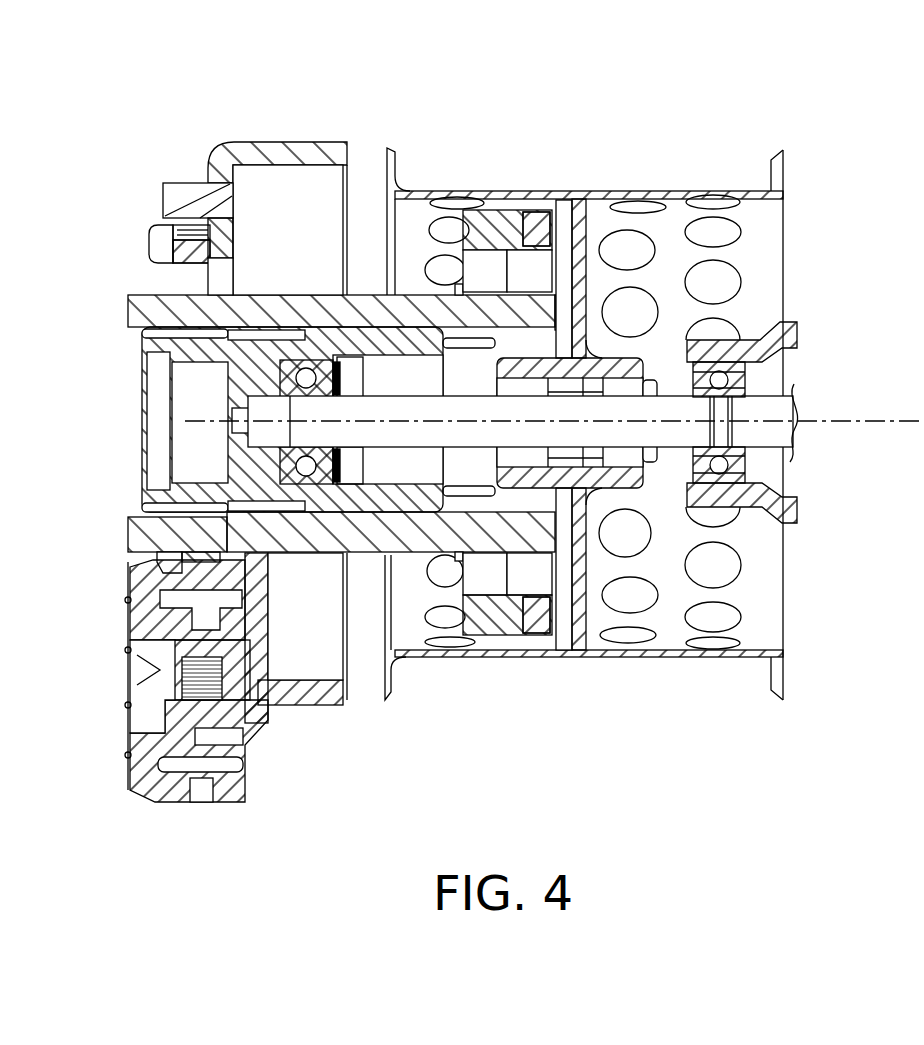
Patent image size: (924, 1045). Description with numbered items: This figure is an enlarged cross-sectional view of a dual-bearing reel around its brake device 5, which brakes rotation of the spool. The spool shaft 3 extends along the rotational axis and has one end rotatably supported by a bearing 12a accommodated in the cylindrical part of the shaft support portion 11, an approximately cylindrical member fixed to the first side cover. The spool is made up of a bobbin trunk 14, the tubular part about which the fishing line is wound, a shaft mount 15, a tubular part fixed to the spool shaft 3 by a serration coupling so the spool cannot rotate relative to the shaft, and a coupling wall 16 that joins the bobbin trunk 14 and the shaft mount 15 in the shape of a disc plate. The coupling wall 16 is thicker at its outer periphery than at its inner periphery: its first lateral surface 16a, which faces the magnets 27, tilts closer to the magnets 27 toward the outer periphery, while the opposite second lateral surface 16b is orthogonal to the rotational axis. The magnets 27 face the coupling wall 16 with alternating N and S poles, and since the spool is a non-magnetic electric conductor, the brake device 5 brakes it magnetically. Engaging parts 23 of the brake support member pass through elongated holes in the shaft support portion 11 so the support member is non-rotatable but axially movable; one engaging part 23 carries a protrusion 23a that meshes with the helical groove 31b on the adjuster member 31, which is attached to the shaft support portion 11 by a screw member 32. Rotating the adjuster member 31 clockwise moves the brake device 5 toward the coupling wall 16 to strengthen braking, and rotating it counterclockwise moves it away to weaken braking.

The spool shaft 3 is at (795, 412).
The brake device 5 is at (368, 545).
The shaft support portion 11 is at (293, 141).
The bearing 12a is at (287, 465).
The bobbin trunk 14 is at (735, 188).
The shaft mount 15 is at (640, 358).
The coupling wall 16 is at (583, 655).
The first lateral surface 16a is at (560, 600).
The second lateral surface 16b is at (625, 607).
The engaging parts 23 is at (128, 520).
The protrusion 23a is at (157, 558).
The magnets 27 is at (537, 225).
The adjuster member 31 is at (125, 775).
The helical groove 31b is at (160, 583).
The screw member 32 is at (128, 720).